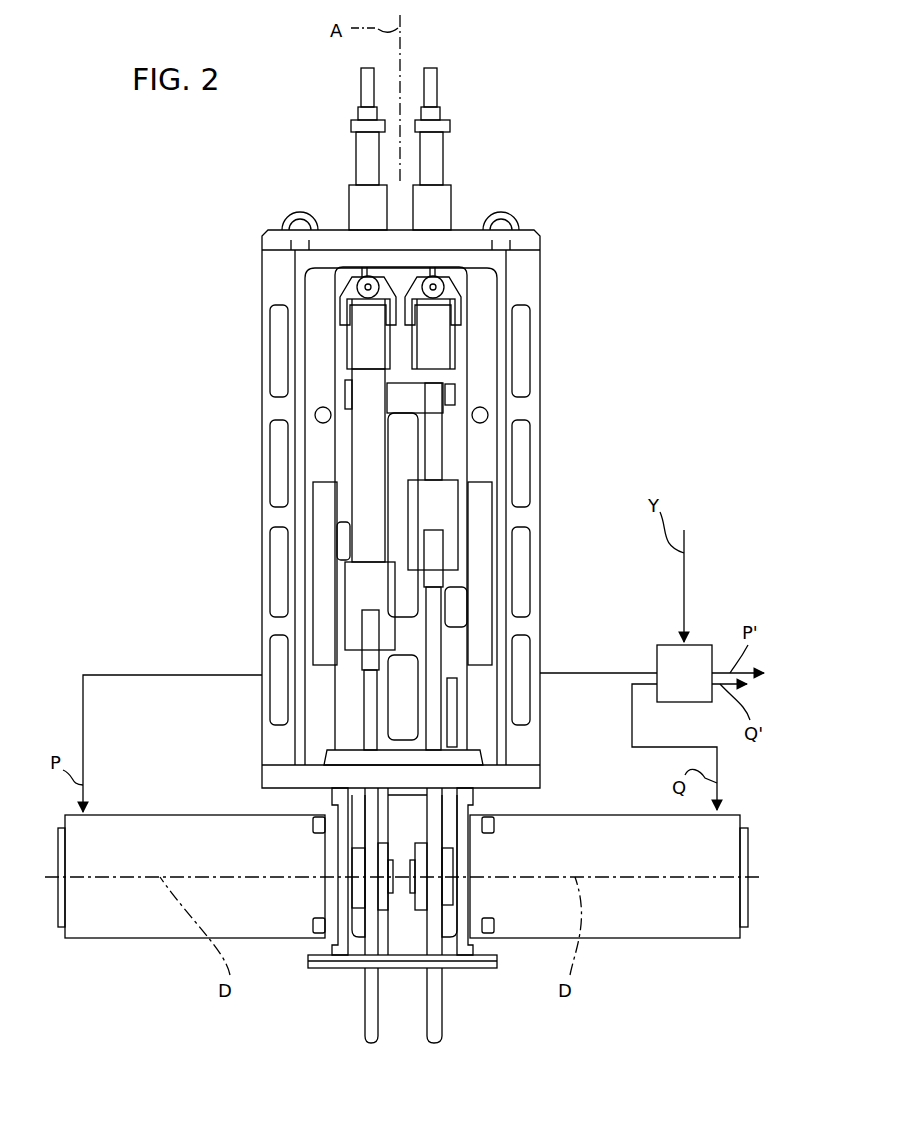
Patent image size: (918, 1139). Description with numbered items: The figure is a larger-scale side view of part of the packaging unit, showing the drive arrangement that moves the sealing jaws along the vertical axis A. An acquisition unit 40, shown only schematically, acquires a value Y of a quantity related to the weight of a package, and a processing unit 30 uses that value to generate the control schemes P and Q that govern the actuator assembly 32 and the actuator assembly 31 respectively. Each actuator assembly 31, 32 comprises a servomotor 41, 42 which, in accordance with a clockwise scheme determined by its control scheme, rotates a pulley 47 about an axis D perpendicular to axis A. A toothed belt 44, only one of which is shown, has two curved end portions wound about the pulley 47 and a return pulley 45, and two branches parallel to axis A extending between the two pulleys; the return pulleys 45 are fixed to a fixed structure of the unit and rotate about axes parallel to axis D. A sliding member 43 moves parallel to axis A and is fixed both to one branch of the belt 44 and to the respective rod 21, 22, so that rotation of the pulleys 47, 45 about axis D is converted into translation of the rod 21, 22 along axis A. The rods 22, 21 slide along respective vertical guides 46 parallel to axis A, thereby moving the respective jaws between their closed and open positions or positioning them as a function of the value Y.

The rod 21 is at (434, 1025).
The rod 22 is at (370, 1025).
The processing unit 30 is at (652, 649).
The actuator assembly 31 is at (578, 778).
The actuator assembly 32 is at (233, 773).
The acquisition unit 40 is at (690, 645).
The servomotor 41 is at (708, 925).
The servomotor 42 is at (107, 932).
The sliding member 43 is at (355, 623).
The toothed belt 44 is at (355, 372).
The return pulley 45 is at (350, 338).
The vertical guide 46 is at (372, 453).
The pulley 47 is at (352, 865).